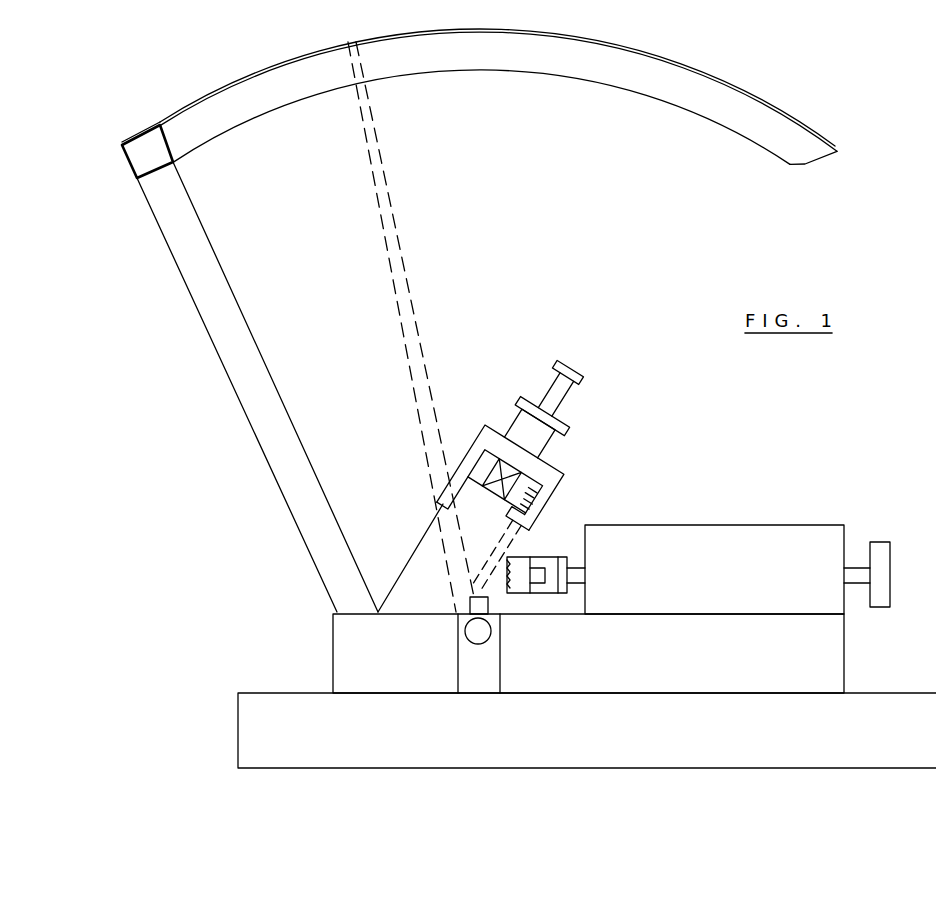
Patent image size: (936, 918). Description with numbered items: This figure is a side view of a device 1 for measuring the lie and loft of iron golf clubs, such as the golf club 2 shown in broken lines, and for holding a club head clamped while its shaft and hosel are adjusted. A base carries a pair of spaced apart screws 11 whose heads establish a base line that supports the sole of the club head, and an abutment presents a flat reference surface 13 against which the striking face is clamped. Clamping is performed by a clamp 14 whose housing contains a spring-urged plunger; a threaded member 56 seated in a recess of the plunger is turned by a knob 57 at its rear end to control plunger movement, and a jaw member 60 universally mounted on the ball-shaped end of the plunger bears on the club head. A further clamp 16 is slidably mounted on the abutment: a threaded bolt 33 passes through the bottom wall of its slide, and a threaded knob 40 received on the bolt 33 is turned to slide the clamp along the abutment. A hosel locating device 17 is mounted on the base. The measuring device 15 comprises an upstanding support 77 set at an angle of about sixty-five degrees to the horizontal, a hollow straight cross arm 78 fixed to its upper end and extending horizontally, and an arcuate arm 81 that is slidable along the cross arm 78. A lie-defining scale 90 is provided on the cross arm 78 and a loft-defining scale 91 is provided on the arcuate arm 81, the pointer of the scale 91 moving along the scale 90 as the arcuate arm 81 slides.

The device 1 is at (851, 399).
The golf club 2 is at (403, 258).
The screws 11 is at (466, 612).
The flat reference surface 13 is at (519, 533).
The clamp 14 is at (735, 515).
The measuring device 15 is at (229, 368).
The further clamp 16 is at (500, 379).
The hosel locating device 17 is at (494, 663).
The threaded bolt 33 is at (571, 388).
The threaded knob 40 is at (570, 431).
The threaded member 56 is at (862, 585).
The knob 57 is at (888, 561).
The jaw member 60 is at (528, 600).
The upstanding support 77 is at (231, 286).
The cross arm 78 is at (127, 168).
The arcuate arm 81 is at (608, 86).
The lie-defining scale 90 is at (146, 132).
The loft-defining scale 91 is at (646, 55).